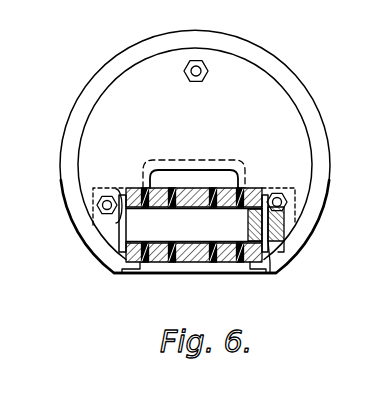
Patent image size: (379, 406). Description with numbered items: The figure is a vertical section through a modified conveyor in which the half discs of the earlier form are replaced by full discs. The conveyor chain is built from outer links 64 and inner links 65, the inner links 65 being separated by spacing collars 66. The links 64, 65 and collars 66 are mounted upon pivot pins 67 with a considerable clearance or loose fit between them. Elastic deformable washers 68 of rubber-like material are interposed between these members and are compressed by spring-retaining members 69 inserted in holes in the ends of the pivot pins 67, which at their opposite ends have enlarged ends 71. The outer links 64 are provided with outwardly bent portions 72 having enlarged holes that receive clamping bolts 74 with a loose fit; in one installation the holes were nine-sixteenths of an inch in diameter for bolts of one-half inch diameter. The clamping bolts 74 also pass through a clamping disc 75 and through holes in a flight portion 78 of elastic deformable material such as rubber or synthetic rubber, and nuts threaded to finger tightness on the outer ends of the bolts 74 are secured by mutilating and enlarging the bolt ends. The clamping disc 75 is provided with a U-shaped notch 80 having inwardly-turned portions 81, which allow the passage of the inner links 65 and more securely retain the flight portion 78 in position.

The outer links 64 is at (131, 269).
The inner links 65 is at (160, 263).
The spacing collars 66 is at (194, 263).
The pivot pins 67 is at (281, 243).
The elastic deformable washers 68 is at (144, 263).
The spring-retaining members 69 is at (284, 227).
The enlarged ends 71 is at (98, 247).
The outwardly bent portions 72 is at (106, 190).
The clamping bolts 74 is at (208, 71).
The clamping disc 75 is at (195, 153).
The flight portions 78 is at (286, 78).
The U-shaped notches 80 is at (180, 172).
The inwardly-turned portions 81 is at (190, 160).